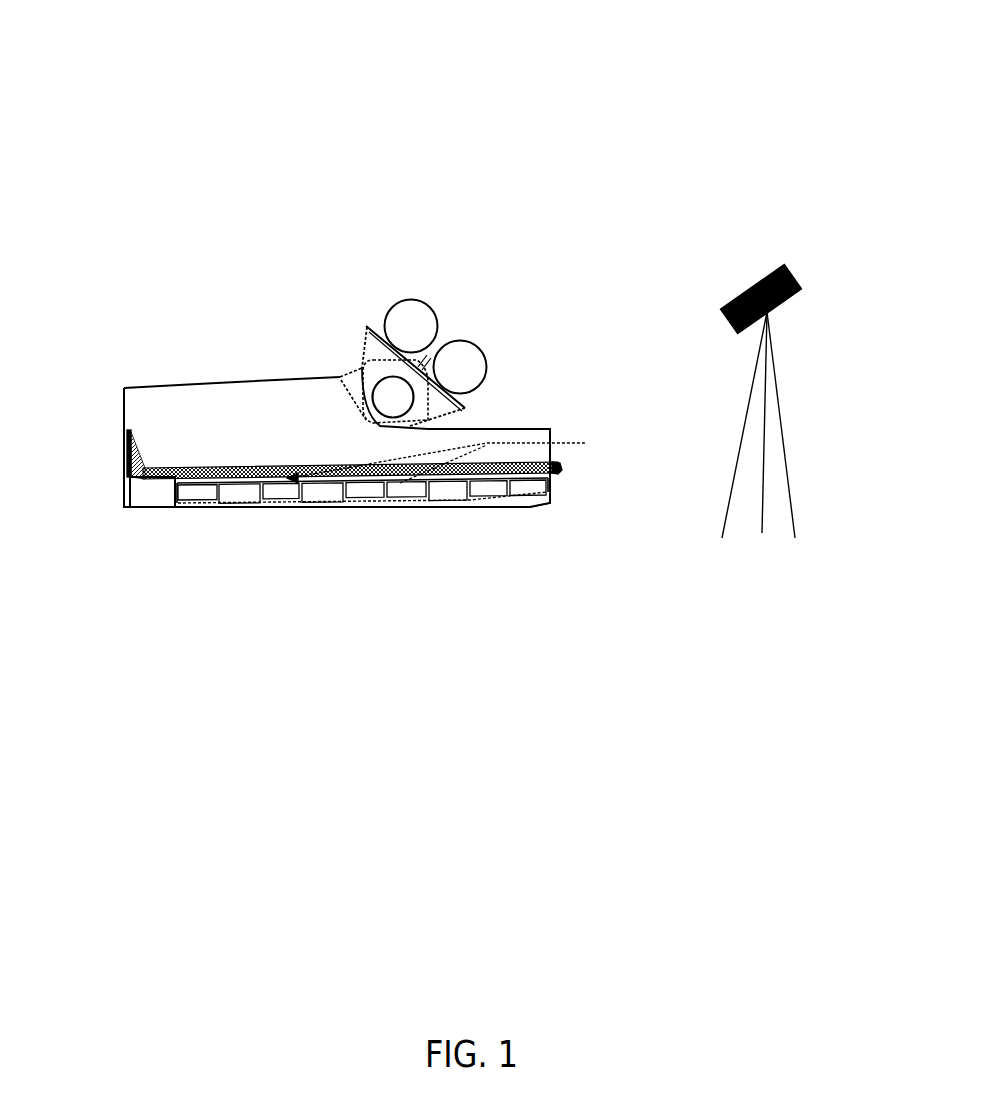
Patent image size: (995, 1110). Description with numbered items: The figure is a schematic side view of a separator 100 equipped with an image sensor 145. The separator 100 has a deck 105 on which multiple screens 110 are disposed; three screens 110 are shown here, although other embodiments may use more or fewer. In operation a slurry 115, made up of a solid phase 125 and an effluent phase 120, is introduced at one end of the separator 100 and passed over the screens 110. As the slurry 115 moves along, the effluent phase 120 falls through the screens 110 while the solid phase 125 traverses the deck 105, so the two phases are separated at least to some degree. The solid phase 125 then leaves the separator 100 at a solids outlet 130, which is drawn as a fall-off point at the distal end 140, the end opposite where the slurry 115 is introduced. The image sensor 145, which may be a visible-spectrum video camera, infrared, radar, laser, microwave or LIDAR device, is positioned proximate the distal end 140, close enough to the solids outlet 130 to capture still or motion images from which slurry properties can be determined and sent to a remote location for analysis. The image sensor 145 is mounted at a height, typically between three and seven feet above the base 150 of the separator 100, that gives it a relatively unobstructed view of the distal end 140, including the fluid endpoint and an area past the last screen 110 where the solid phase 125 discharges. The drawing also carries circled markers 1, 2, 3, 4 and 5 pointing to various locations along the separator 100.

The separator 100 is at (287, 110).
The deck 105 is at (189, 508).
The screens 110 is at (307, 510).
The slurry 115 is at (247, 463).
The effluent phase 120 is at (210, 513).
The solid phase 125 is at (562, 477).
The solids outlet 130 is at (540, 493).
The distal end 140 is at (617, 410).
The image sensor 145 is at (793, 277).
The base 150 is at (116, 500).
The step one marker 1 is at (142, 430).
The step two marker 2 is at (361, 500).
The step three marker 3 is at (487, 468).
The step four marker 4 is at (238, 542).
The step five marker 5 is at (556, 492).